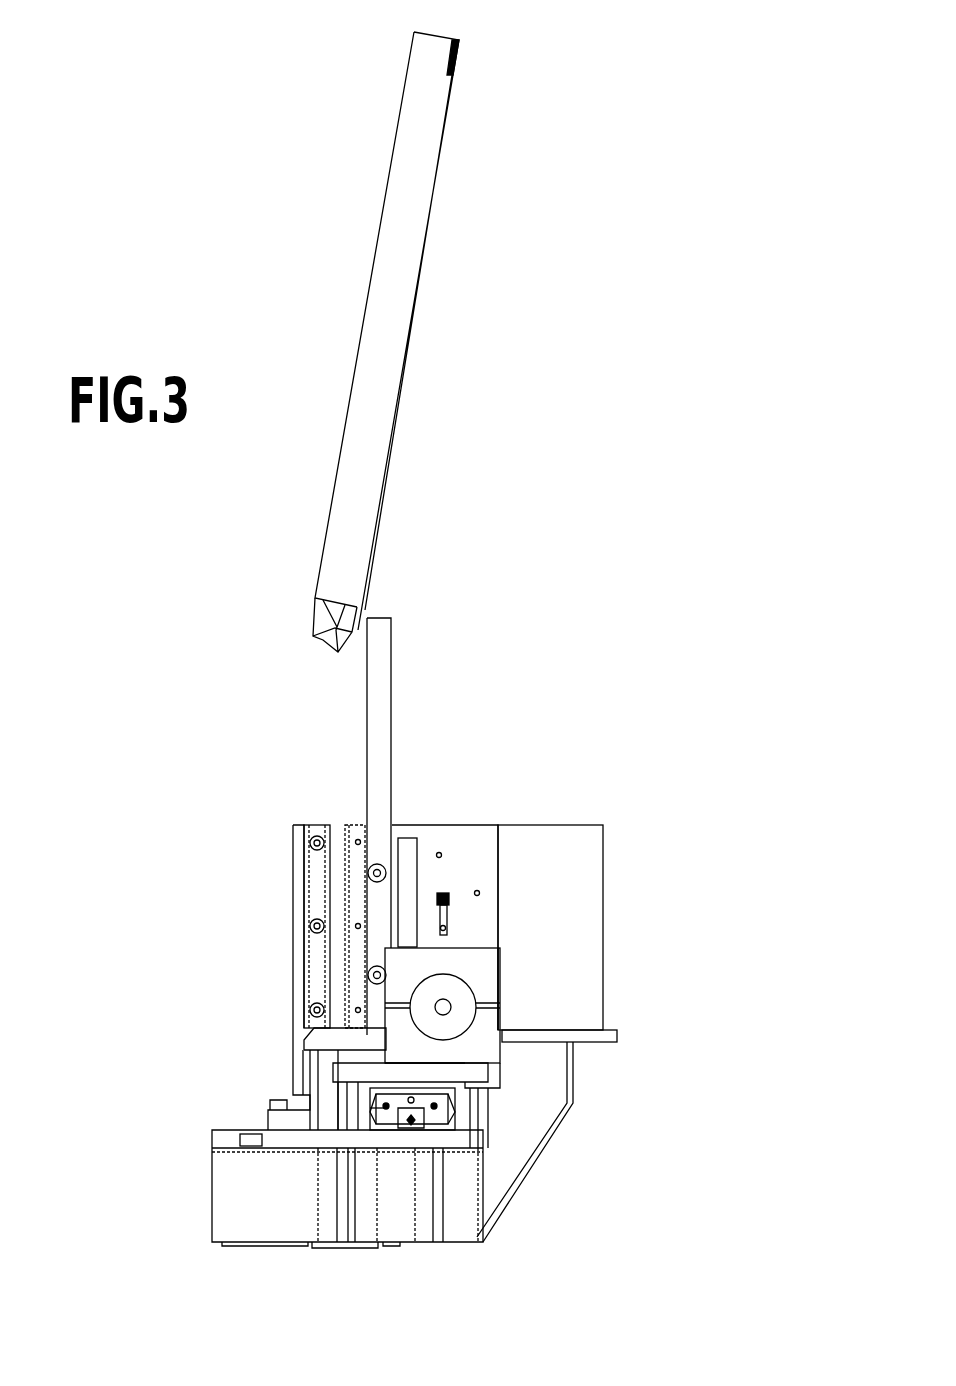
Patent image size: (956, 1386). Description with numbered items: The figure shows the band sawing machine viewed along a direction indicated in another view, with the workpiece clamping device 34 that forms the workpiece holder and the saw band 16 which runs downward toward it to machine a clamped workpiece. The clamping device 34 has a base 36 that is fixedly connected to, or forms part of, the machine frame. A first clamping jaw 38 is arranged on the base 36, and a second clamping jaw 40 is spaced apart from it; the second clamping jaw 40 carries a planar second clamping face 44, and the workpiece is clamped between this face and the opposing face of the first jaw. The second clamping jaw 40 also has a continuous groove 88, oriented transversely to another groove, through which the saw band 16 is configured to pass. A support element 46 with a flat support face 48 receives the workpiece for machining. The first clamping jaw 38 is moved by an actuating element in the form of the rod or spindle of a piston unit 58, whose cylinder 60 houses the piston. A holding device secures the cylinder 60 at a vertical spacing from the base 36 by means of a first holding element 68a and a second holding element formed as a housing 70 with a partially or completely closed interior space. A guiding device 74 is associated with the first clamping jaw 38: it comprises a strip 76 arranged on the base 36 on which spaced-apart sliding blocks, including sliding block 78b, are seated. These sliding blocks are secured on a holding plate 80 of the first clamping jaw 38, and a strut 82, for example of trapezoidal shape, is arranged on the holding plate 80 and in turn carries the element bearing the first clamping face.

The saw band 16 is at (363, 463).
The workpiece clamping device 34 is at (233, 1020).
The base 36 is at (262, 1208).
The first clamping jaw 38 is at (465, 840).
The second clamping jaw 40 is at (572, 840).
The second clamping face 44 is at (565, 967).
The support element 46 is at (590, 1042).
The support face 48 is at (586, 1028).
The piston unit 58 is at (458, 993).
The cylinder 60 is at (465, 1045).
The first holding element 68a is at (480, 1040).
The housing 70 is at (486, 947).
The guiding device 74 is at (434, 1120).
The strip 76 is at (405, 1130).
The sliding block 78b is at (385, 1108).
The holding plate 80 is at (347, 1073).
The strut 82 is at (425, 845).
The groove 88 is at (334, 840).